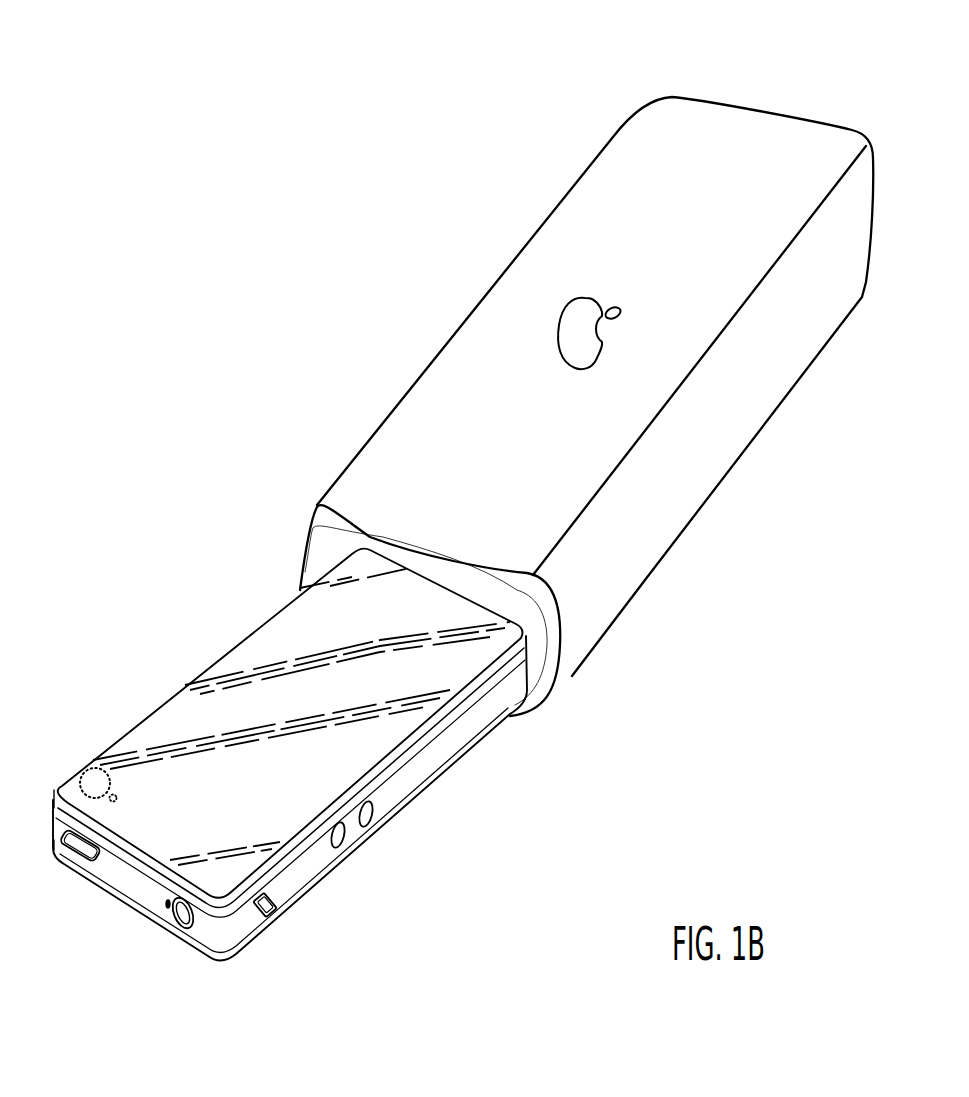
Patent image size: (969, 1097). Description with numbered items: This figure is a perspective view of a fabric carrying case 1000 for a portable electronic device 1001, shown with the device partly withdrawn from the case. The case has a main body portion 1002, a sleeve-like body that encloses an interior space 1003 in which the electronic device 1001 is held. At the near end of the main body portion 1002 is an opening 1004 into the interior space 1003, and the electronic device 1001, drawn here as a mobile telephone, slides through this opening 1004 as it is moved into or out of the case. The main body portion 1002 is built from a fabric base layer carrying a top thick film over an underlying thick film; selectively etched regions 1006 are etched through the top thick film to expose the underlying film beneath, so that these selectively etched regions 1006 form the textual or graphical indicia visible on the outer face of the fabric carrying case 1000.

The fabric carrying case 1000 is at (700, 97).
The portable electronic device 1001 is at (177, 596).
The main body portion 1002 is at (614, 188).
The interior space 1003 is at (536, 650).
The opening 1004 is at (540, 590).
The selectively etched regions 1006 is at (585, 371).